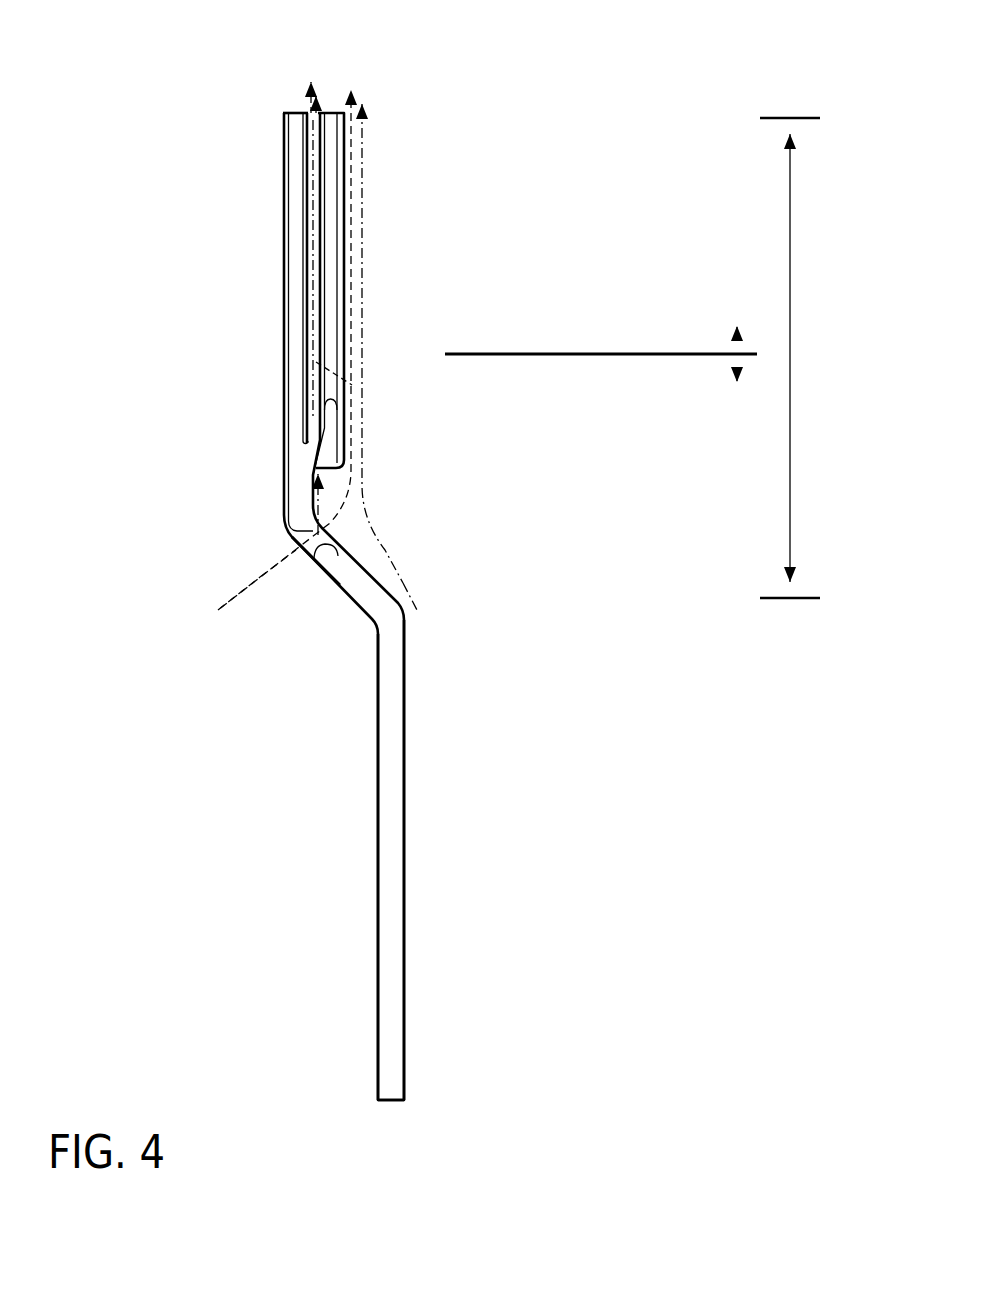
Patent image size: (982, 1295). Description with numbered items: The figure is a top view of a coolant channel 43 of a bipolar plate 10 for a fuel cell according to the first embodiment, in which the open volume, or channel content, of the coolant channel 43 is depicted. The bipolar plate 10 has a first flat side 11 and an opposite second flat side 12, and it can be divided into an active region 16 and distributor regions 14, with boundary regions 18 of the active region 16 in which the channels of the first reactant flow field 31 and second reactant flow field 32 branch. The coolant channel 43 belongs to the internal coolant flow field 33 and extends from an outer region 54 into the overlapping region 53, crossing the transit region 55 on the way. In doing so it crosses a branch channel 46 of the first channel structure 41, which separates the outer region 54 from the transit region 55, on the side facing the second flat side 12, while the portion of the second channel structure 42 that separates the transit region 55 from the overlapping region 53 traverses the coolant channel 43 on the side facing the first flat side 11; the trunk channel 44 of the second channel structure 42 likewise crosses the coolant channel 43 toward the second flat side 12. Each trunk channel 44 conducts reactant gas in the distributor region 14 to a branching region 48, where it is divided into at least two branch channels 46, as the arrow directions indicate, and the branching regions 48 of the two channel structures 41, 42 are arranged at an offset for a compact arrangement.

The bipolar plate 10 is at (514, 53).
The first flat side 11 is at (404, 898).
The second flat side 12 is at (404, 838).
The distributor region 14 is at (737, 371).
The active region 16 is at (737, 338).
The boundary region 18 is at (790, 235).
The first reactant flow field 31 is at (418, 609).
The second reactant flow field 32 is at (243, 585).
The coolant flow field 33 is at (404, 765).
The first channel structure 41 is at (464, 622).
The second channel structure 42 is at (212, 573).
The coolant channel 43 is at (330, 237).
The trunk channel 44 is at (296, 553).
The branch channel 46 is at (315, 333).
The branching region 48 is at (370, 385).
The overlapping region 53 is at (346, 187).
The outer region 54 is at (336, 655).
The transit region 55 is at (343, 483).